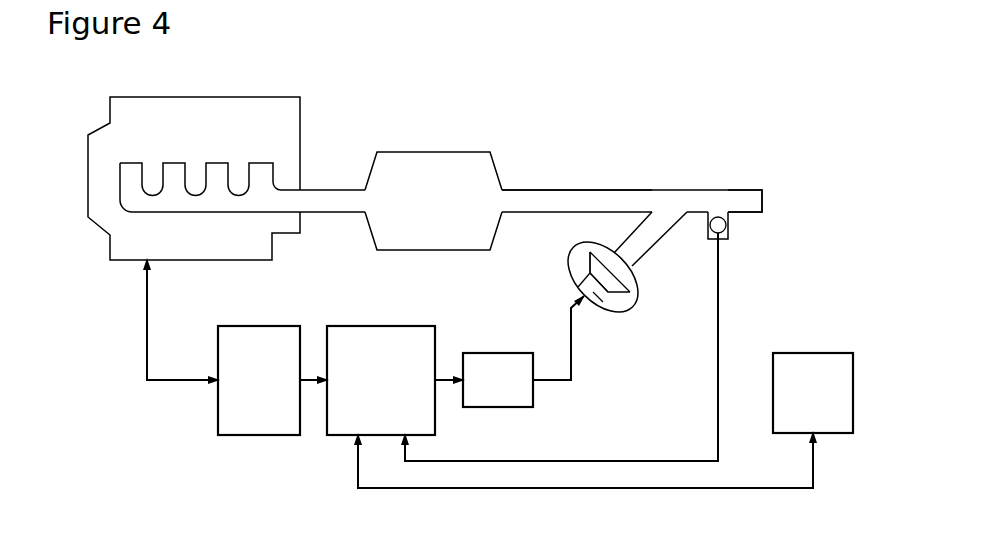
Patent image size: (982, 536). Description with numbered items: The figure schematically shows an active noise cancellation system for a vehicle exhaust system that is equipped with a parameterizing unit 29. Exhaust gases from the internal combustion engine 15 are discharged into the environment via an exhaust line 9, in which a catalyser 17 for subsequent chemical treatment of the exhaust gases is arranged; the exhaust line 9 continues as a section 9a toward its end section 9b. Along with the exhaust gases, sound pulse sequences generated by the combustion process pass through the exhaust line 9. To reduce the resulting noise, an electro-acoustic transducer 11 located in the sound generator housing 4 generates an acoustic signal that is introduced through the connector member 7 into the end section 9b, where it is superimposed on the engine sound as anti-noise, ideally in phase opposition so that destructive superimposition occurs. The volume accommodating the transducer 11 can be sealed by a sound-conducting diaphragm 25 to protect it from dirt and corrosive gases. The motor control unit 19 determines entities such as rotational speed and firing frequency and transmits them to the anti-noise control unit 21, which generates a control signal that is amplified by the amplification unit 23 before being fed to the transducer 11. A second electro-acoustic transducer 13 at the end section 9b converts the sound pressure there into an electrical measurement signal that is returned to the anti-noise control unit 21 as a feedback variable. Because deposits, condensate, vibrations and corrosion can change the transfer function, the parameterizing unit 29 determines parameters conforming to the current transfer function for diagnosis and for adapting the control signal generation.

The internal combustion engine 15 is at (263, 123).
The exhaust line 9 is at (325, 182).
The exhaust pipe section downstream of catalyst 9a is at (597, 197).
The end section 9b is at (750, 195).
The catalyser 17 is at (437, 165).
The connector member 7 is at (642, 237).
The sound-conducting diaphragm 25 is at (615, 253).
The sound generator housing 4 is at (632, 300).
The electro-acoustic transducer 11 is at (607, 313).
The electro-acoustic transducer 13 is at (727, 232).
The motor control unit 19 is at (255, 403).
The anti-noise control unit 21 is at (340, 417).
The amplification unit 23 is at (514, 365).
The parameterizing unit 29 is at (793, 368).